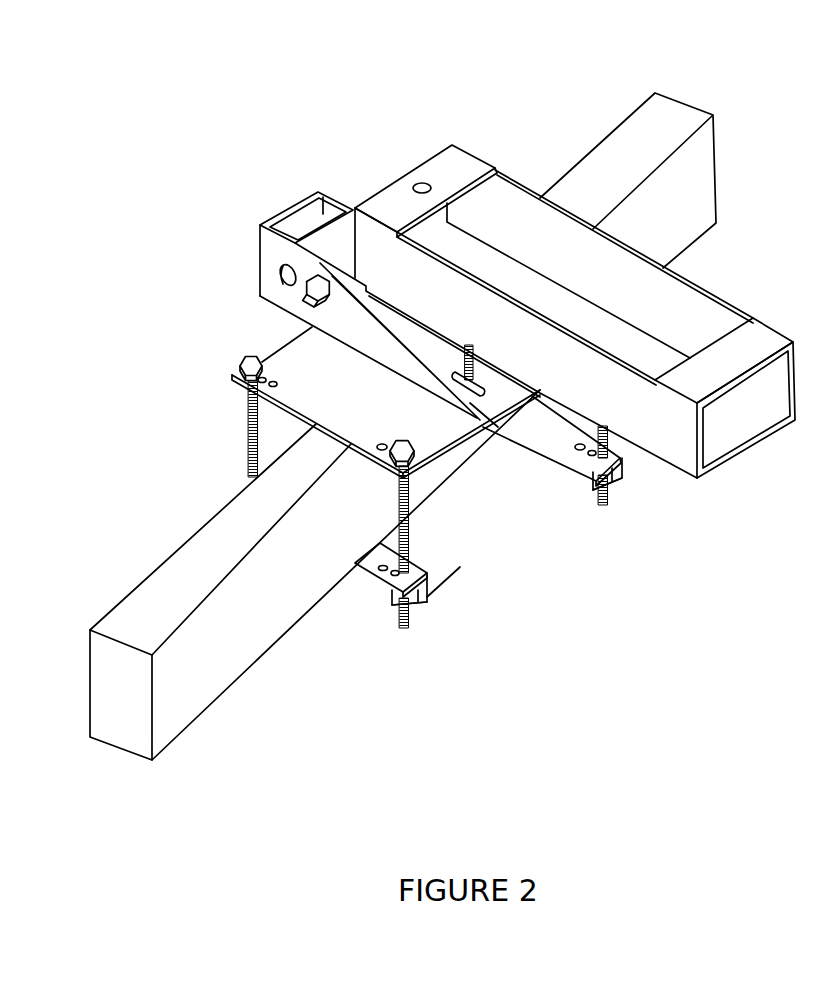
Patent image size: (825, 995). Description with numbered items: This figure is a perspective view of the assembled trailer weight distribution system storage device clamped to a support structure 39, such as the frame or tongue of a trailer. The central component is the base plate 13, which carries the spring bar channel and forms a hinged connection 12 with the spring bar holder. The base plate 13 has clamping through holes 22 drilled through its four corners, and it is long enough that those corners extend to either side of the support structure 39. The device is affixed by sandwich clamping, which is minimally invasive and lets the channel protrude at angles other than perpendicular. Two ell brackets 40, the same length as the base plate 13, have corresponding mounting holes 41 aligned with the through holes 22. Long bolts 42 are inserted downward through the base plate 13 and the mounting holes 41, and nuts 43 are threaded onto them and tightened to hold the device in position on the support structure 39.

The hinged connection 12 is at (286, 298).
The base plate 13 is at (234, 269).
The through holes 22 is at (228, 379).
The support structure 39 is at (190, 693).
The ell brackets 40 is at (532, 422).
The mounting holes 41 is at (578, 447).
The long bolts 42 is at (247, 427).
The nuts 43 is at (622, 472).